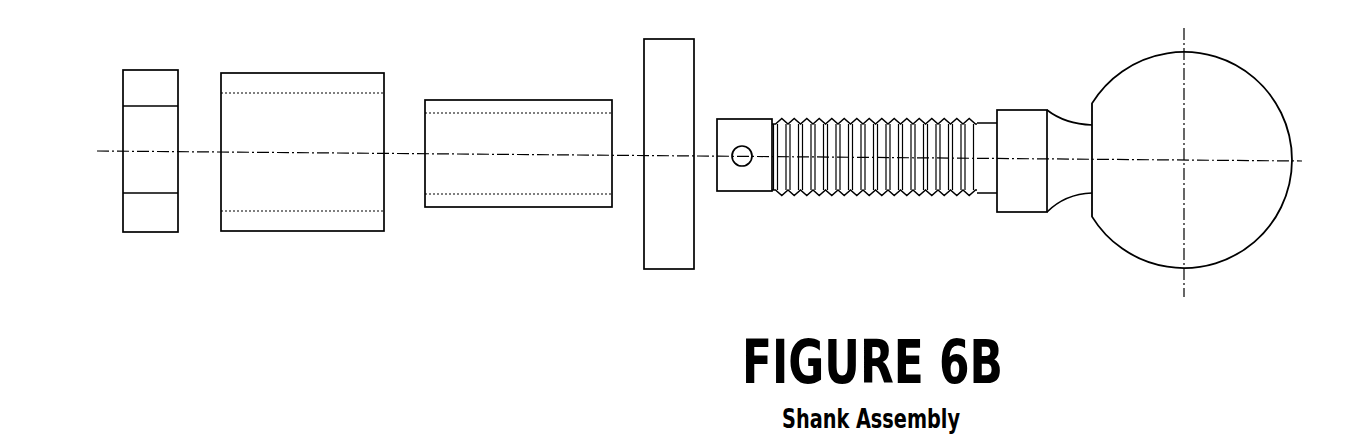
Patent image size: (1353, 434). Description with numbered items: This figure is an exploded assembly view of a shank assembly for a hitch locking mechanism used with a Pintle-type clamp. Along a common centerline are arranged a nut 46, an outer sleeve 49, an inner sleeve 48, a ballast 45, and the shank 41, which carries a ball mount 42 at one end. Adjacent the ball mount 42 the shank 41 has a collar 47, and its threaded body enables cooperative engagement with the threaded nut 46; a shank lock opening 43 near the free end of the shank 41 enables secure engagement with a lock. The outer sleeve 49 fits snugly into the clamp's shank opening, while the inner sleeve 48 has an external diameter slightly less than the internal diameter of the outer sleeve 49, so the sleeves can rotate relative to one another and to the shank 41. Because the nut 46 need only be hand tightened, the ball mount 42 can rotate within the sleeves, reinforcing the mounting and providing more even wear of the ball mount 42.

The shank 41 is at (893, 202).
The ball mount 42 is at (1205, 252).
The shank lock opening 43 is at (739, 143).
The ballast 45 is at (675, 253).
The threaded nut 46 is at (143, 87).
The collar 47 is at (1011, 123).
The inner sleeve 48 is at (562, 190).
The outer sleeve 49 is at (355, 203).